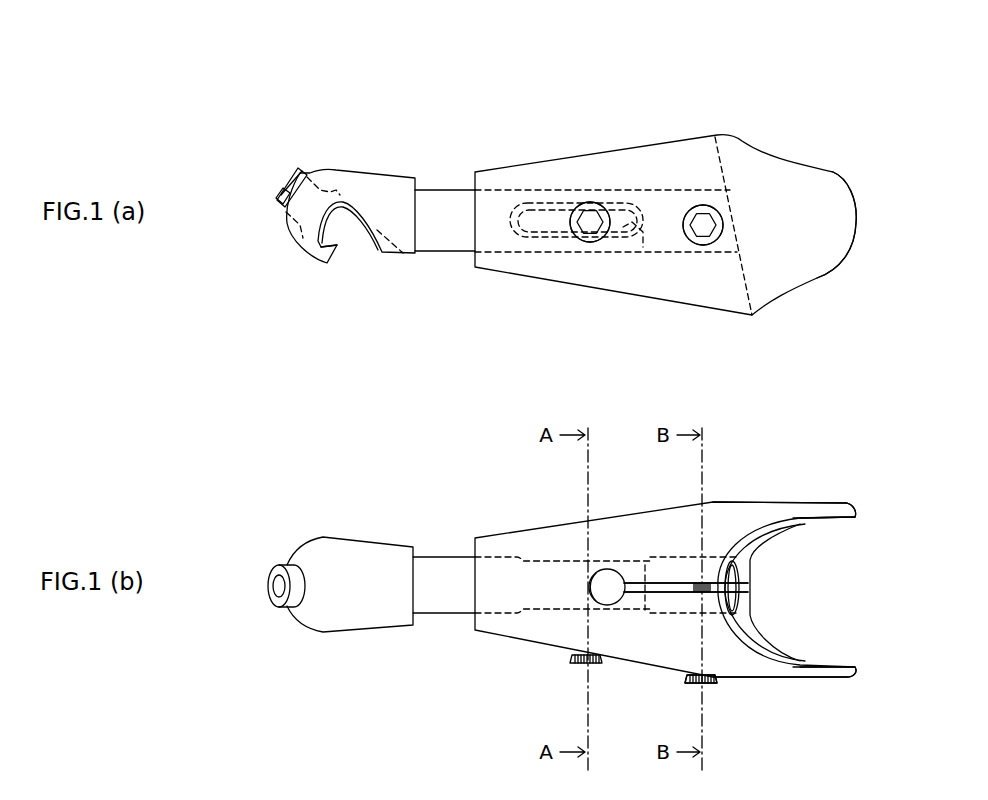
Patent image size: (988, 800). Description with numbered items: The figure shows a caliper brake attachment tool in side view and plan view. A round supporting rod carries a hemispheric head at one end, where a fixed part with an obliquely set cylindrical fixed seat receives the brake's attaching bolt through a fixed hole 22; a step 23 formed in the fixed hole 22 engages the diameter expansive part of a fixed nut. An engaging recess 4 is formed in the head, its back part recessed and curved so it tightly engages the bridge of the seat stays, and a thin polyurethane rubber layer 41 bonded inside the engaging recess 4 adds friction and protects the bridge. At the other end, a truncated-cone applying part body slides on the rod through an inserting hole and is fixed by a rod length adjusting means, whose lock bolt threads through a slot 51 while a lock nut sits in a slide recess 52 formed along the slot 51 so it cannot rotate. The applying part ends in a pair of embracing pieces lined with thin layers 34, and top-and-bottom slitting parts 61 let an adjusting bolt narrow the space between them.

The fixed hole 22 is at (300, 225).
The step 23 is at (303, 228).
The engaging recess 4 is at (371, 266).
The thin layer 41 is at (338, 246).
The thin layers 34 is at (853, 521).
The slot 51 is at (642, 247).
The slide recess 52 is at (512, 237).
The slitting parts 61 is at (662, 595).